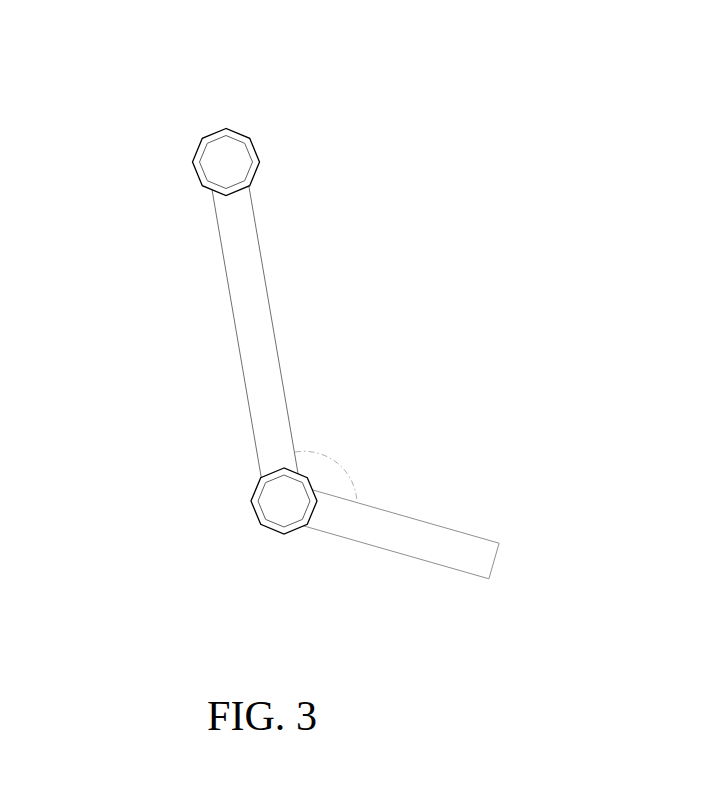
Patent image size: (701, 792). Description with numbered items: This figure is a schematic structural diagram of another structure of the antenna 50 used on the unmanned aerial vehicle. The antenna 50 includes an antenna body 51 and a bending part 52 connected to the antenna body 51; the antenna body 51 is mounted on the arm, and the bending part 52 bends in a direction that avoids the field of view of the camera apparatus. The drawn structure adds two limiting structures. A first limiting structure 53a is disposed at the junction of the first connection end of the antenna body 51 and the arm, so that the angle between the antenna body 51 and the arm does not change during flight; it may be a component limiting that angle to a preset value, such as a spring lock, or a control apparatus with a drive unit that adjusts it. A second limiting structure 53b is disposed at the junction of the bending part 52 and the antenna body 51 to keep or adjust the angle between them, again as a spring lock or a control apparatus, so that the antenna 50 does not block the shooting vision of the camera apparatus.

The antenna 50 is at (282, 325).
The antenna body 51 is at (260, 312).
The bending part 52 is at (435, 566).
The first limiting structure 53a is at (230, 167).
The second limiting structure 53b is at (285, 507).